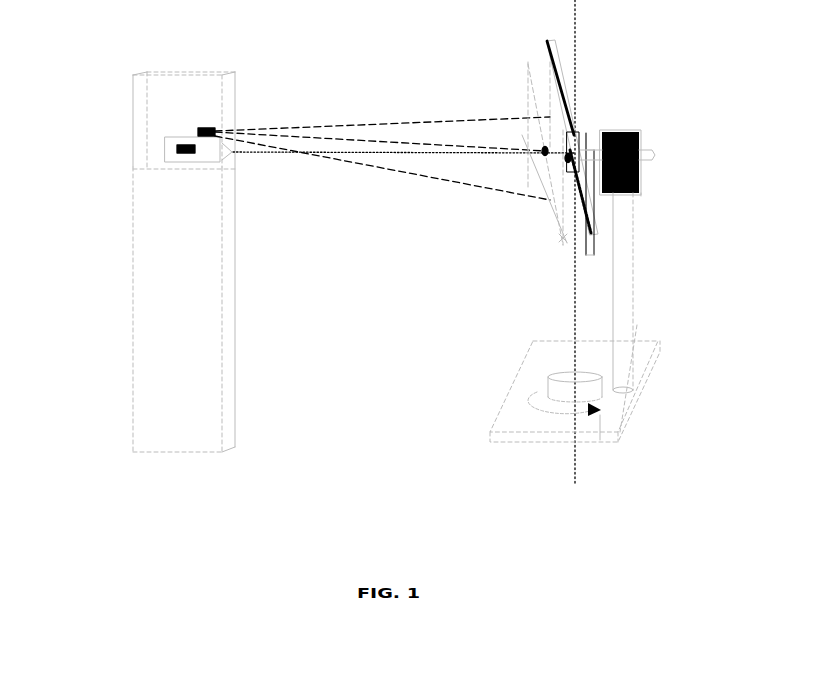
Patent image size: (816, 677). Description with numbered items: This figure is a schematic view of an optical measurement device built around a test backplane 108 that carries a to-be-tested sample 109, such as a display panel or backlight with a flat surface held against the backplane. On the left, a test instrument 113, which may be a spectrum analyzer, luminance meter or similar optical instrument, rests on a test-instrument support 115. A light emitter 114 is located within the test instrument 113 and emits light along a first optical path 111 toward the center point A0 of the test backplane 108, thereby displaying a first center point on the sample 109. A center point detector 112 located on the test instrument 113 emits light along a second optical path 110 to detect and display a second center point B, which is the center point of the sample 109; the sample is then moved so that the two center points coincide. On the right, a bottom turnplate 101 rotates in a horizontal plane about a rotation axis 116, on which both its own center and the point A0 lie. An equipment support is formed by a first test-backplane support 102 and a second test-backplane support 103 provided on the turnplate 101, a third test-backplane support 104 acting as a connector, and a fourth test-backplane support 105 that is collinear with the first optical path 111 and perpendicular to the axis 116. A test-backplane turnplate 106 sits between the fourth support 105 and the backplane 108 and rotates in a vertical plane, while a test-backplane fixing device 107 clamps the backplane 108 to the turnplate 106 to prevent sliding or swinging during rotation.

The bottom turnplate 101 is at (602, 412).
The first test-backplane support 102 is at (658, 342).
The second test-backplane support 103 is at (631, 300).
The third test-backplane support 104 is at (641, 195).
The fourth test-backplane support 105 is at (654, 158).
The test-backplane turnplate 106 is at (596, 142).
The test-backplane fixing device 107 is at (575, 117).
The test backplane 108 is at (548, 56).
The to-be-tested sample 109 is at (563, 240).
The second optical path 110 is at (345, 123).
The first optical path 111 is at (262, 154).
The center point detector 112 is at (216, 130).
The test instrument 113 is at (203, 159).
The light emitter 114 is at (176, 147).
The test-instrument support 115 is at (133, 310).
The rotation axis 116 is at (574, 368).
The second center point B is at (544, 149).
The center point of the test backplane A0 is at (566, 163).